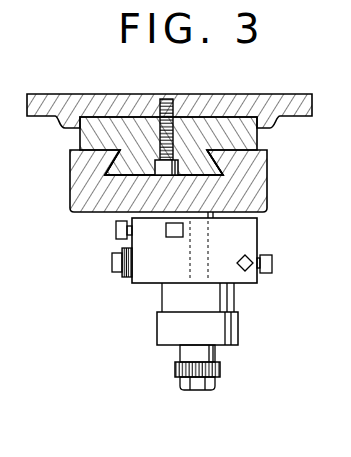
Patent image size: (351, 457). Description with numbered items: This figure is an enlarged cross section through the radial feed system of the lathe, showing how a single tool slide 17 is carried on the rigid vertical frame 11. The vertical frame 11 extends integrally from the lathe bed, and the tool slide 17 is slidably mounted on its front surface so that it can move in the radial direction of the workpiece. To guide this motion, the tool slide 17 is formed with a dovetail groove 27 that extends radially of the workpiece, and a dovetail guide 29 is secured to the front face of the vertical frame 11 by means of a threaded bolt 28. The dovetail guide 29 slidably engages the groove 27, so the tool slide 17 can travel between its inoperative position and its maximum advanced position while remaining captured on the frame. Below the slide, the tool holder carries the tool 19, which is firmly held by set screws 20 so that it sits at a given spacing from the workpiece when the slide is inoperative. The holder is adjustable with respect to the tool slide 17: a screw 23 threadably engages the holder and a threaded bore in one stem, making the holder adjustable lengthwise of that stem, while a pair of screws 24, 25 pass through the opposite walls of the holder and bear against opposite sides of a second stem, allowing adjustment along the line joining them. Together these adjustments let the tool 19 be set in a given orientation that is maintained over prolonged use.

The vertical frame 11 is at (267, 100).
The dovetail guide 29 is at (242, 141).
The tool slide 17 is at (258, 190).
The dovetail groove 27 is at (103, 171).
The threaded bolt 28 is at (167, 98).
The tool 19 is at (173, 237).
The set screw 20 is at (115, 230).
The screw 24 is at (112, 268).
The screw 25 is at (272, 262).
The screw 23 is at (205, 388).